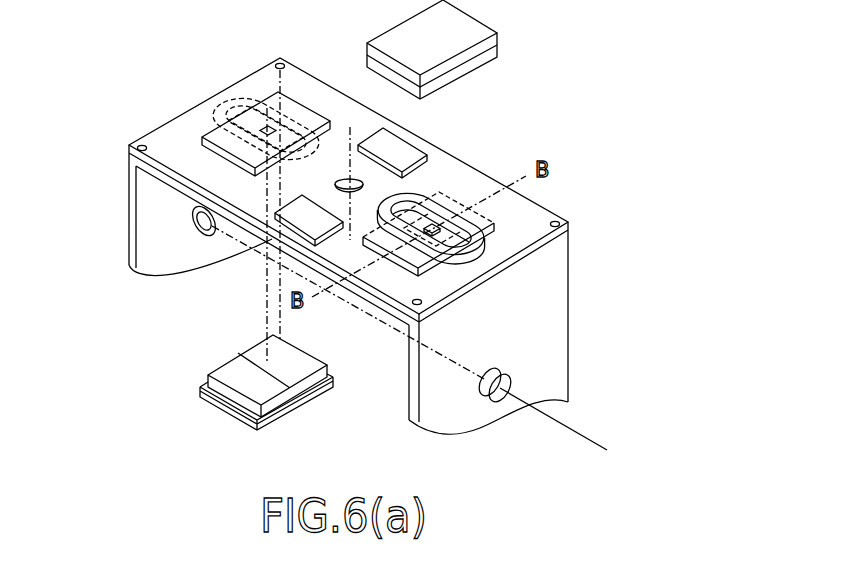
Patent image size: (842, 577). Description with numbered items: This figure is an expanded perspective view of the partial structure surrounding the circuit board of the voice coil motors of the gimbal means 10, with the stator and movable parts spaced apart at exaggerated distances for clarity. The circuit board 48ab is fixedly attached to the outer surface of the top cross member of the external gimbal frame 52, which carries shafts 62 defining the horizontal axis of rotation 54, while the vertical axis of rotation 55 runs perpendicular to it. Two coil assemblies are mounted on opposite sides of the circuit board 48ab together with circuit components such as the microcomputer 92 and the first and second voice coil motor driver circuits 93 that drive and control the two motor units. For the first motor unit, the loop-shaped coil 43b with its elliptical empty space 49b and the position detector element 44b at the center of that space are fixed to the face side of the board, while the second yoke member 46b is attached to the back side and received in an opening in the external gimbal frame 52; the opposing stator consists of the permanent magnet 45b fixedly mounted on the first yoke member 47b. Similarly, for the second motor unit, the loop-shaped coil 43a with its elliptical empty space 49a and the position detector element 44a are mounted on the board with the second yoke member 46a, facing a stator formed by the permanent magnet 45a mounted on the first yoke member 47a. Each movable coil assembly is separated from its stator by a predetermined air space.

The gimbal means 10 is at (590, 108).
The loop-shaped coil 43a is at (218, 106).
The loop-shaped coil 43b is at (487, 224).
The position detector element 44a is at (265, 108).
The position detector element 44b is at (433, 227).
The permanent magnet 45a is at (237, 354).
The permanent magnet 45b is at (489, 46).
The second yoke member 46a is at (193, 160).
The second yoke member 46b is at (412, 262).
The first yoke member 47a is at (236, 413).
The first yoke member 47b is at (498, 33).
The circuit board 48ab is at (192, 158).
The elliptical empty space 49a is at (228, 104).
The elliptical empty space 49b is at (486, 214).
The external gimbal frame 52 is at (553, 280).
The horizontal axis of rotation 54 is at (553, 423).
The vertical axis of rotation 55 is at (349, 127).
The shaft 62 is at (500, 398).
The microcomputer 92 is at (312, 218).
The voice coil motor driver circuits 93 is at (407, 137).